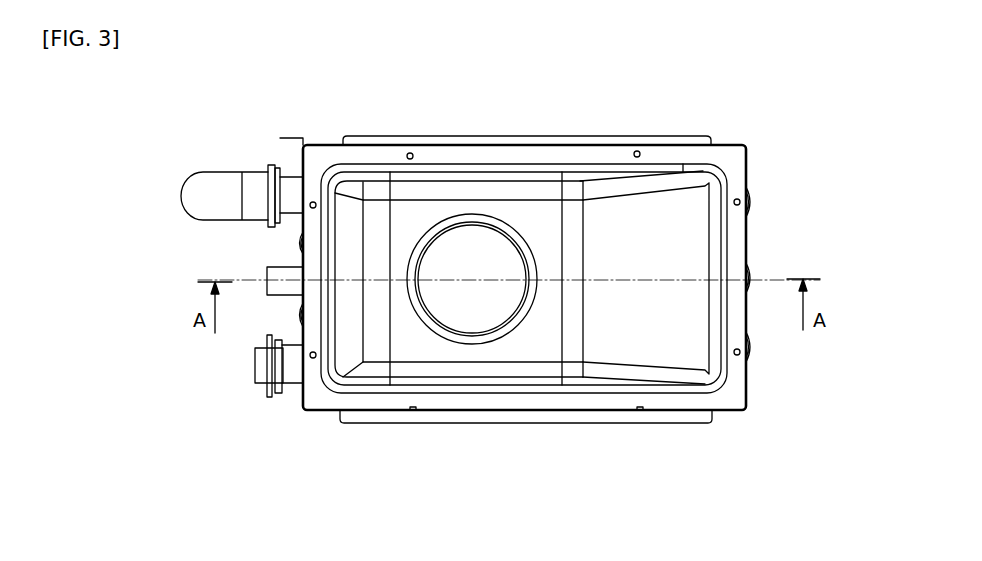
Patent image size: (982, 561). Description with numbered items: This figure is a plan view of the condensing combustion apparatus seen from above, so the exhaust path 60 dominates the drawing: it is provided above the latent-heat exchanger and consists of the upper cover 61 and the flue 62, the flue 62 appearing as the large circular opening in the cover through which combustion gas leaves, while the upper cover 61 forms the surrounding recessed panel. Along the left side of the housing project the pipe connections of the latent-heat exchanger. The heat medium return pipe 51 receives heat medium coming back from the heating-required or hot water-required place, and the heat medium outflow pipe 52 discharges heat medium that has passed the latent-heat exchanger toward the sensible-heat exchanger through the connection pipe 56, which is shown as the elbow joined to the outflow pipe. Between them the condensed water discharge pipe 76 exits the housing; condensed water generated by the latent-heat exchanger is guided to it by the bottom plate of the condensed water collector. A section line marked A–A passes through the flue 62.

The heat medium return pipe 51 is at (293, 378).
The heat medium outflow pipe 52 is at (293, 180).
The connection pipe 56 is at (191, 198).
The exhaust path 60 is at (522, 345).
The upper cover 61 is at (608, 340).
The flue 62 is at (470, 340).
The condensed water discharge pipe 76 is at (268, 275).